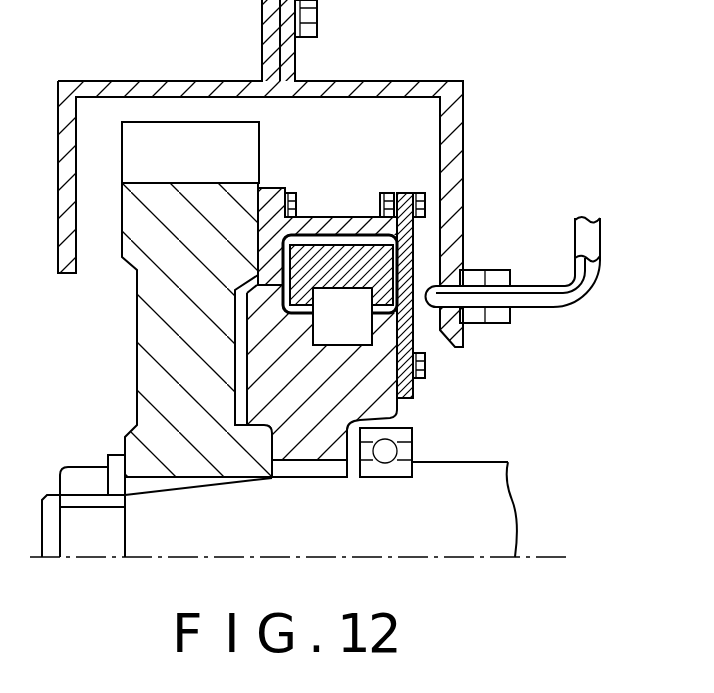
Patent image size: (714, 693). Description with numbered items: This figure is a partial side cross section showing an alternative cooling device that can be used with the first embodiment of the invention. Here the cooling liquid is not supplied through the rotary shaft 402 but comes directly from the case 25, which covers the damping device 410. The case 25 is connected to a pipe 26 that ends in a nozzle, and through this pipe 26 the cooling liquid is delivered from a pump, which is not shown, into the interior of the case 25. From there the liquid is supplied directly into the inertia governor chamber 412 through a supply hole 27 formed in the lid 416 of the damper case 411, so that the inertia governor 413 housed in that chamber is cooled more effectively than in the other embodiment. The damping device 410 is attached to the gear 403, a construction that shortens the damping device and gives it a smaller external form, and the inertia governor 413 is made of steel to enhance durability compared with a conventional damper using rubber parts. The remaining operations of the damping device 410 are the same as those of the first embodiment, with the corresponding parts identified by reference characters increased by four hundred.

The case 25 is at (368, 90).
The pipe 26 is at (582, 300).
The supply hole 27 is at (420, 278).
The rotary shaft 402 is at (493, 512).
The gear 403 is at (144, 238).
The damping device 410 is at (401, 286).
The damper case 411 is at (316, 217).
The inertia governor chamber 412 is at (387, 310).
The inertia governor 413 is at (342, 252).
The lid 416 is at (420, 345).